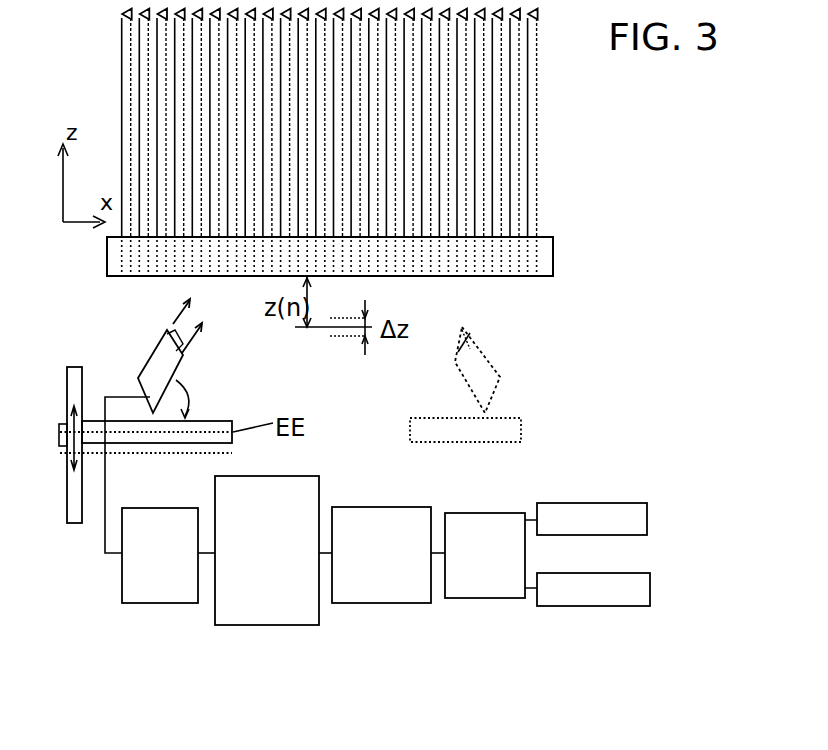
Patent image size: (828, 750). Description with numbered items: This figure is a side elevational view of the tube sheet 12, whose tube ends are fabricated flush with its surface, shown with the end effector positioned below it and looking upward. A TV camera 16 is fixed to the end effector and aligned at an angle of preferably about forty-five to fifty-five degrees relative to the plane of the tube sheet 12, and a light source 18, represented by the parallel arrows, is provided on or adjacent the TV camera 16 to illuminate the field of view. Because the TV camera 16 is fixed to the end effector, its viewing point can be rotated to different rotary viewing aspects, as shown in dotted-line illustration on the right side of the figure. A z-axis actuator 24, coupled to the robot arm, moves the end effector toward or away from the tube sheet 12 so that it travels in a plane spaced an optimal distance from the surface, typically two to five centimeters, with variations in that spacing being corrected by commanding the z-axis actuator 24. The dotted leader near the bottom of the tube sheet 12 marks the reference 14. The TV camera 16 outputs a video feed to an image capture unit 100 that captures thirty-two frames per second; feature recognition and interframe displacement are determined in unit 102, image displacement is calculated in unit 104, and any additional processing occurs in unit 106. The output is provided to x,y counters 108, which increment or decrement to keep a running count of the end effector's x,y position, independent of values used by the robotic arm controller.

The tube sheet 12 is at (548, 232).
The base block surface 14 is at (531, 278).
The TV camera 16 is at (188, 372).
The light source 18 is at (175, 315).
The z-axis actuator 24 is at (70, 367).
The image capture unit 100 is at (157, 603).
The feature recognition and interframe displacement unit 102 is at (285, 627).
The image displacement unit 104 is at (410, 605).
The processing unit 106 is at (478, 605).
The x,y counters 108 is at (654, 588).